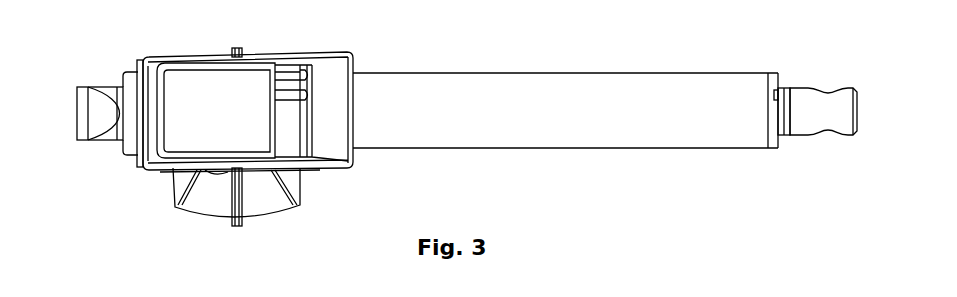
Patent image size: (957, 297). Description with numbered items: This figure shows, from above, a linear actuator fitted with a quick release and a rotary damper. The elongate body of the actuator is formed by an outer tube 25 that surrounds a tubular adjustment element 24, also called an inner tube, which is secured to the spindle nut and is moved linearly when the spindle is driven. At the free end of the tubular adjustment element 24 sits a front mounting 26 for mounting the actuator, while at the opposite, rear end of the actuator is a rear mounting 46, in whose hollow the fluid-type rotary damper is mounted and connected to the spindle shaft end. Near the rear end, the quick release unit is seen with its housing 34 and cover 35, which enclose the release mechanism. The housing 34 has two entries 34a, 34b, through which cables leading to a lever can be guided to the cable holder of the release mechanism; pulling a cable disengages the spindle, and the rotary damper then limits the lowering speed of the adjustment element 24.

The tubular adjustment element 24 is at (782, 92).
The outer tube 25 is at (545, 85).
The front mounting 26 is at (850, 92).
The housing 34 is at (303, 148).
The entry 34a is at (303, 72).
The entry 34b is at (307, 96).
The cover 35 is at (202, 78).
The rear mounting 46 is at (85, 103).